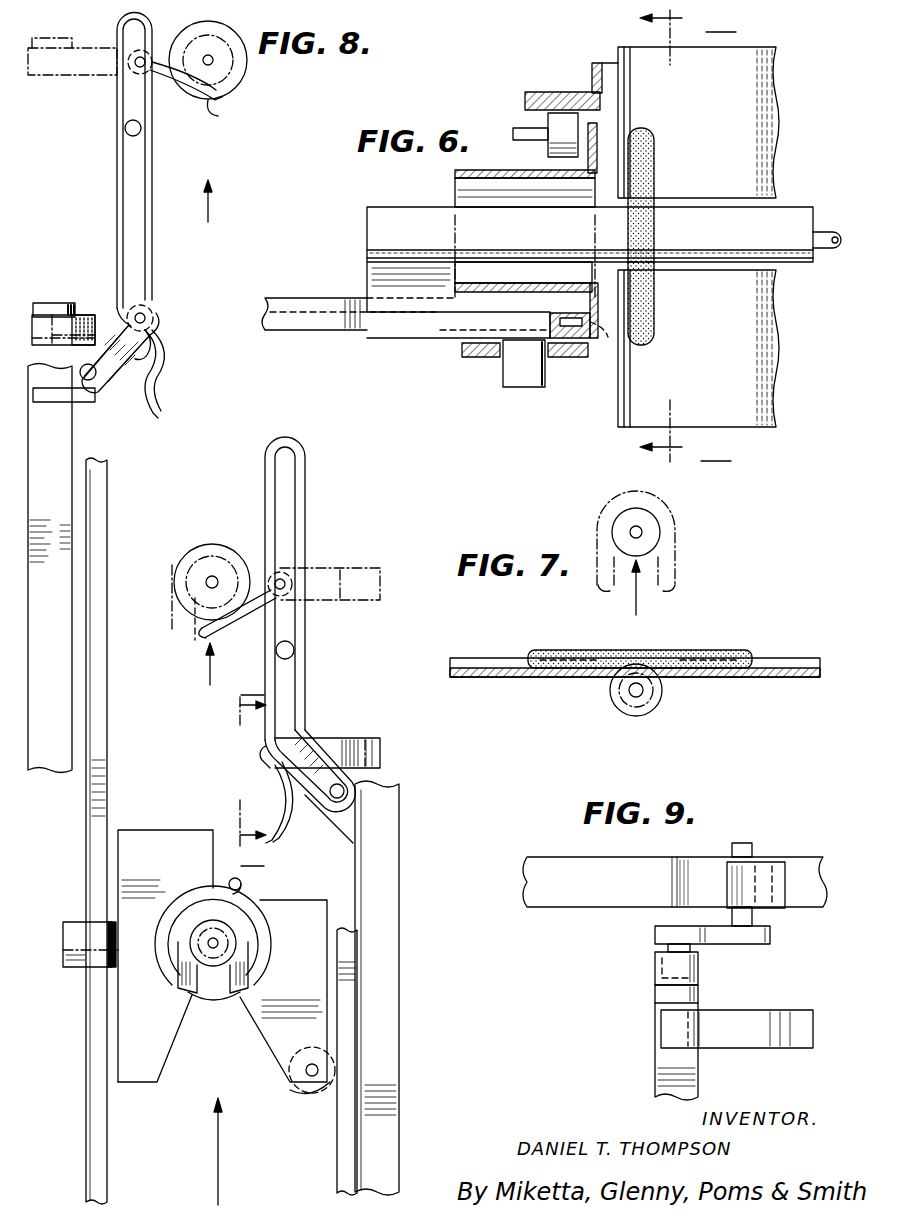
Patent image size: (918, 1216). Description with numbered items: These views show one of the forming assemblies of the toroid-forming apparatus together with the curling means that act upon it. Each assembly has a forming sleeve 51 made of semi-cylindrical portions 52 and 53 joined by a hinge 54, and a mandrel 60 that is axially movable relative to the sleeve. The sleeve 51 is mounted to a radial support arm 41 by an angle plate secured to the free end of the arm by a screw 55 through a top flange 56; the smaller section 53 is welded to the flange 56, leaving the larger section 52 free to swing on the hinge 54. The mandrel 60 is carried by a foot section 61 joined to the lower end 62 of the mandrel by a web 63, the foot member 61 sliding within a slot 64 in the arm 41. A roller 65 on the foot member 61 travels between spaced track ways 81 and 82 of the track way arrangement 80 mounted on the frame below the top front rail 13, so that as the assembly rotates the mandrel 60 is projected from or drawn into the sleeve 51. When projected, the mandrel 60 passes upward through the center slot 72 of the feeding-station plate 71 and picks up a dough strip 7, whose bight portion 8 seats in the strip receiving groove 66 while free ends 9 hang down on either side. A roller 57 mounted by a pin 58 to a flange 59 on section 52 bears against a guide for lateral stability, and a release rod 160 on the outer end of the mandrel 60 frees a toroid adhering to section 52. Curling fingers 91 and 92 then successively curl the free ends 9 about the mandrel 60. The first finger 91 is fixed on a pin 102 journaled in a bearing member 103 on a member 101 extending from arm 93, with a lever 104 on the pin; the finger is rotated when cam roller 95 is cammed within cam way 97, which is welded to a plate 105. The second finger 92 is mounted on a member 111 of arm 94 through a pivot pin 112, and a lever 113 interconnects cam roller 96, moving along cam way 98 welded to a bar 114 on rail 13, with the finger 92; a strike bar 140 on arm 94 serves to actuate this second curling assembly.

In FIG. 8, the dough strip 7 is at (246, 68).
In FIG. 6, the dough strip 7 is at (662, 172).
In FIG. 7, the dough strip 7 is at (688, 522).
In FIG. 8, the bight portion 8 is at (213, 908).
In FIG. 7, the bight portion 8 is at (633, 500).
In FIG. 8, the strip free end 9 is at (180, 633).
In FIG. 7, the strip free end 9 is at (599, 575).
In FIG. 8, the top front rail 13 is at (64, 713).
In FIG. 6, the radial support arm 41 is at (296, 300).
In FIG. 6, the forming sleeve 51 is at (448, 198).
In FIG. 8, the semi-cylindrical sleeve portion 52 is at (274, 955).
In FIG. 6, the semi-cylindrical sleeve portion 52 is at (457, 176).
In FIG. 8, the semi-cylindrical sleeve portion 53 is at (167, 918).
In FIG. 6, the semi-cylindrical sleeve portion 53 is at (480, 290).
In FIG. 8, the hinge 54 is at (243, 885).
In FIG. 6, the screw 55 is at (650, 338).
In FIG. 8, the top flange 56 is at (158, 1042).
In FIG. 6, the top flange 56 is at (595, 300).
In FIG. 8, the roller 57 is at (314, 1089).
In FIG. 6, the roller 57 is at (549, 145).
In FIG. 8, the pin 58 is at (306, 1070).
In FIG. 6, the pin 58 is at (521, 127).
In FIG. 8, the flange 59 is at (267, 1020).
In FIG. 6, the flange 59 is at (598, 125).
In FIG. 8, the mandrel 60 is at (193, 946).
In FIG. 6, the mandrel 60 is at (727, 243).
In FIG. 7, the mandrel 60 is at (611, 712).
In FIG. 6, the foot section 61 is at (378, 325).
In FIG. 6, the lower end of mandrel 62 is at (374, 212).
In FIG. 6, the web 63 is at (376, 278).
In FIG. 6, the slot 64 is at (265, 324).
In FIG. 8, the roller 65 is at (64, 963).
In FIG. 6, the roller 65 is at (513, 368).
In FIG. 7, the strip receiving groove 66 is at (646, 706).
In FIG. 6, the plate 71 is at (760, 51).
In FIG. 7, the plate 71 is at (470, 678).
In FIG. 6, the center slot 72 is at (771, 205).
In FIG. 7, the center slot 72 is at (670, 677).
In FIG. 6, the clamp 80 is at (466, 366).
In FIG. 6, the track way 81 is at (492, 360).
In FIG. 8, the track way 82 is at (101, 786).
In FIG. 6, the track way 82 is at (566, 359).
In FIG. 8, the curling finger 91 is at (220, 625).
In FIG. 9, the curling finger 91 is at (753, 1020).
In FIG. 8, the curling finger 92 is at (213, 104).
In FIG. 8, the arm 93 is at (378, 737).
In FIG. 9, the arm 93 is at (656, 1074).
In FIG. 8, the arm 94 is at (28, 72).
In FIG. 8, the cam roller 95 is at (380, 797).
In FIG. 9, the cam roller 95 is at (747, 913).
In FIG. 8, the cam roller 96 is at (149, 136).
In FIG. 8, the cam way 97 is at (296, 691).
In FIG. 8, the cam way 98 is at (148, 271).
In FIG. 8, the member 101 is at (344, 569).
In FIG. 9, the member 101 is at (656, 993).
In FIG. 8, the pin 102 is at (291, 727).
In FIG. 9, the pin 102 is at (665, 948).
In FIG. 9, the bearing member 103 is at (655, 968).
In FIG. 8, the lever 104 is at (266, 759).
In FIG. 9, the lever 104 is at (728, 932).
In FIG. 8, the plate 105 is at (349, 832).
In FIG. 8, the member 111 is at (86, 48).
In FIG. 8, the pivot pin 112 is at (132, 80).
In FIG. 8, the lever 113 is at (155, 82).
In FIG. 8, the bar 114 is at (77, 398).
In FIG. 8, the strike bar 140 is at (50, 306).
In FIG. 6, the release rod 160 is at (838, 240).